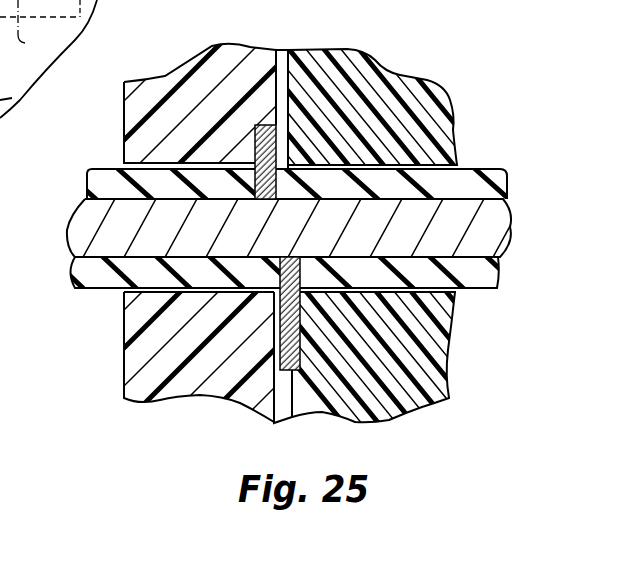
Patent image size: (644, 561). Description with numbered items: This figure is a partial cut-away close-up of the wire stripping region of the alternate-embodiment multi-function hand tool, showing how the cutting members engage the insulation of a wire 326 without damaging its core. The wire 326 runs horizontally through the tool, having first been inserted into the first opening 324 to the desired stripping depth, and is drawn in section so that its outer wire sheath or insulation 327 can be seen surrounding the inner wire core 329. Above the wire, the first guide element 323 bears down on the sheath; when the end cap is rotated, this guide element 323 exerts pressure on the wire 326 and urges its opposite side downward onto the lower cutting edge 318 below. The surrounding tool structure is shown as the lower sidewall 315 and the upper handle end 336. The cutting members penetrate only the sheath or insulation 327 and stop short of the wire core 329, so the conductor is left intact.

The lower sidewall 315 is at (162, 95).
The lower cutting edge 318 is at (290, 333).
The first guide element 323 is at (254, 126).
The first opening 324 is at (48, 59).
The wire 326 is at (66, 294).
The wire sheath or insulation 327 is at (459, 187).
The wire core 329 is at (77, 237).
The upper handle end 336 is at (390, 82).